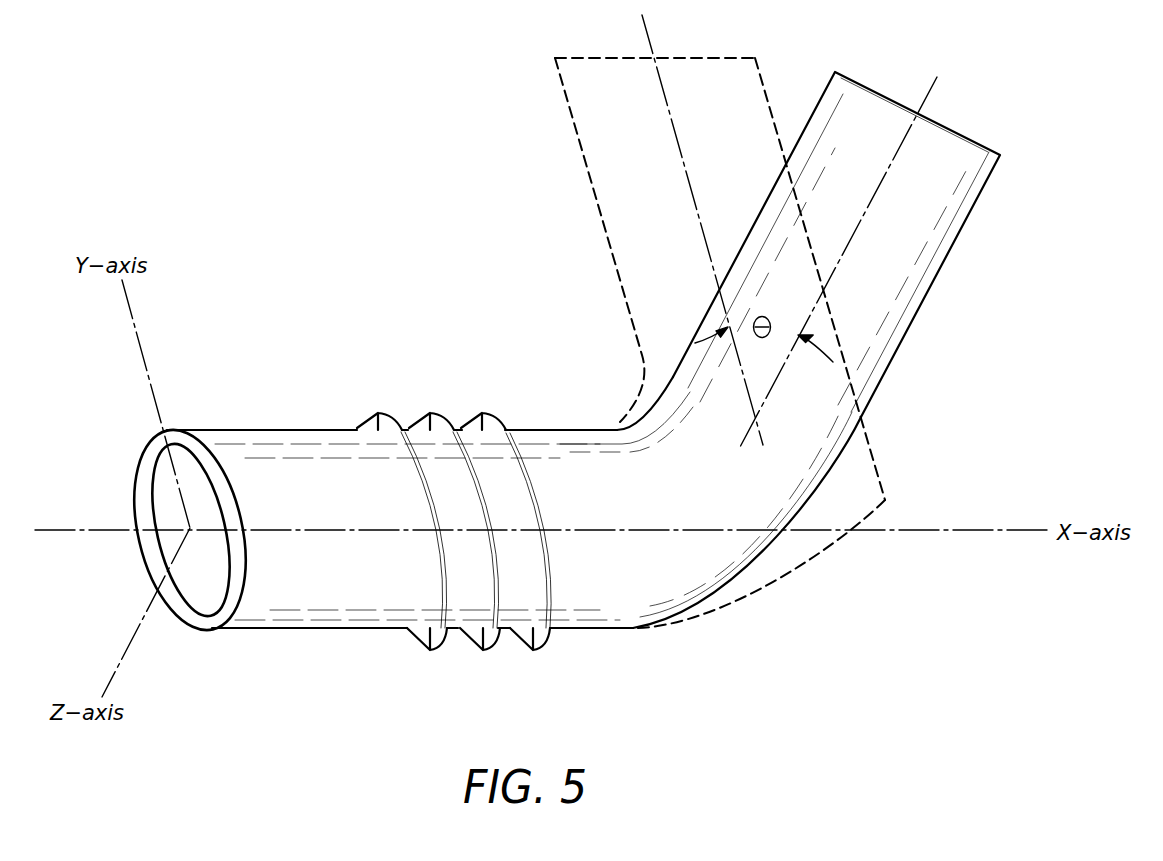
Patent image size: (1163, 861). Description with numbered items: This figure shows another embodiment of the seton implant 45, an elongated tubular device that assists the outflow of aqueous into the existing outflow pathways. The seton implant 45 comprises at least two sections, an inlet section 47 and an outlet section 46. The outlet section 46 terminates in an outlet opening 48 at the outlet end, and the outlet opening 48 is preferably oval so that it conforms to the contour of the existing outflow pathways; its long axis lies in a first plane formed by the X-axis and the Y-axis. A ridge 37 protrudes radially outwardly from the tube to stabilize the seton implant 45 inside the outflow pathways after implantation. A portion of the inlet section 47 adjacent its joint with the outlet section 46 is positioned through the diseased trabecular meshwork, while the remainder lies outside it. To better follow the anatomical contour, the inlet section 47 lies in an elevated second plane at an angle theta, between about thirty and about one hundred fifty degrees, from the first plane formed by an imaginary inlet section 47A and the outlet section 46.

The seton implant 45 is at (595, 348).
The ridge 37 is at (429, 413).
The outlet section 46 is at (308, 630).
The inlet section 47 is at (968, 215).
The imaginary inlet section 47A is at (757, 68).
The outlet opening 48 is at (203, 583).